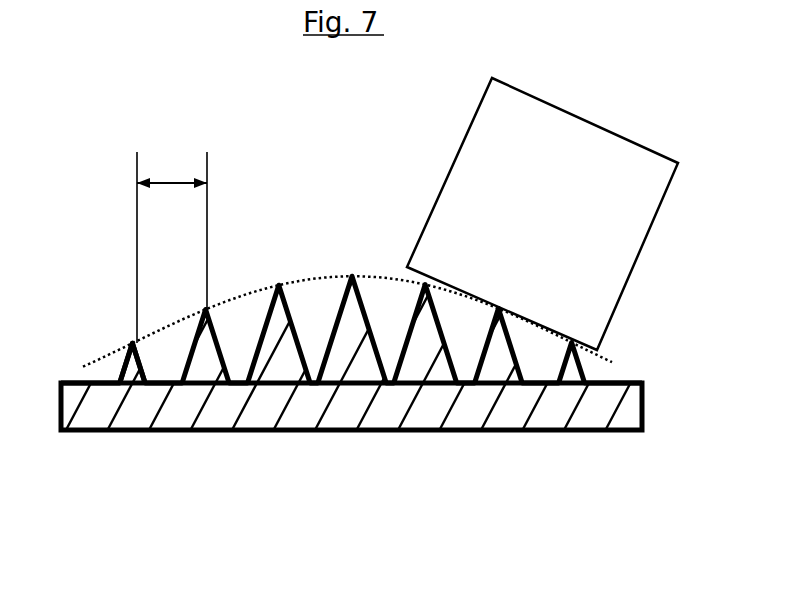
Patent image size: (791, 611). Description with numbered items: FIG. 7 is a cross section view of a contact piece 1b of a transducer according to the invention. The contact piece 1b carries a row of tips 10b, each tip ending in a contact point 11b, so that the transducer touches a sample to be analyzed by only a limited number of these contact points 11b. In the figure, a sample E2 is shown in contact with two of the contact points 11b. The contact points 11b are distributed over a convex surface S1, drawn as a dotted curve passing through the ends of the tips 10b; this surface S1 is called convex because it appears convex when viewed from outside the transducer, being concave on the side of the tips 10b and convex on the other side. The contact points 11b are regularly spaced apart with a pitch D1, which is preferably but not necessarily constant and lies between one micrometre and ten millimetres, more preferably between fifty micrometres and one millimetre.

The contact piece 1b is at (257, 415).
The tips 10b is at (283, 327).
The contact points 11b is at (137, 341).
The convex surface S1 is at (243, 297).
The pitch D1 is at (172, 246).
The sample E2 is at (463, 192).